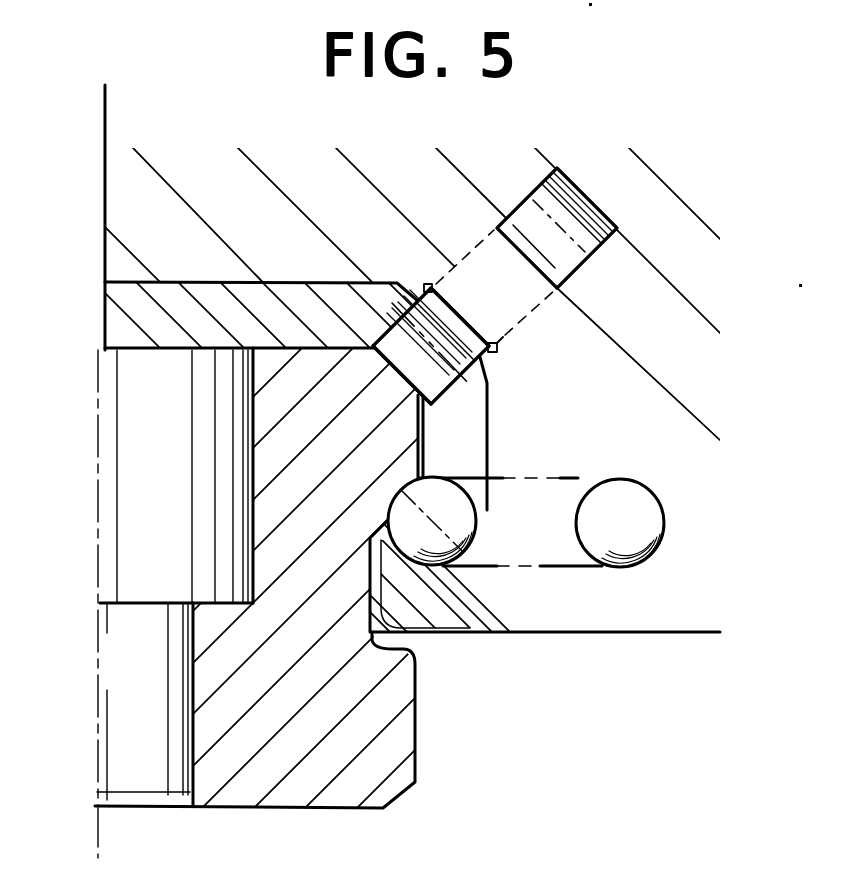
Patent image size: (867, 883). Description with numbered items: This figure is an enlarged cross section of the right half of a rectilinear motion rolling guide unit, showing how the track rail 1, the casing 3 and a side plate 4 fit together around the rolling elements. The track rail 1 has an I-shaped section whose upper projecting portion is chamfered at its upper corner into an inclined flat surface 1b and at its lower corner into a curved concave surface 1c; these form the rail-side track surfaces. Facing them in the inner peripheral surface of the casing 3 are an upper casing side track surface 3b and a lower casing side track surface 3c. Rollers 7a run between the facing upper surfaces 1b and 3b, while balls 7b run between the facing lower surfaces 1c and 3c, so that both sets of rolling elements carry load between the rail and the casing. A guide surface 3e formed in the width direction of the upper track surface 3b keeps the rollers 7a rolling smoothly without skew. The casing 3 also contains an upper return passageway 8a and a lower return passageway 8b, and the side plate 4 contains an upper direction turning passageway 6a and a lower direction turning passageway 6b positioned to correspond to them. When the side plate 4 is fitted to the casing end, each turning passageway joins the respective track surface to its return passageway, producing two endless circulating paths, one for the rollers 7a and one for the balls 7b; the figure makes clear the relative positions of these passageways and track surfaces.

The track rail 1 is at (297, 785).
The inclined flat surface 1b is at (397, 377).
The curved concave surface 1c is at (390, 493).
The casing 3 is at (578, 620).
The upper casing side track surface 3b is at (458, 318).
The lower casing side track surface 3c is at (478, 548).
The guide surface 3e is at (424, 286).
The side plate 4 is at (107, 315).
The upper direction turning passageway 6a is at (478, 250).
The lower direction turning passageway 6b is at (546, 488).
The roller 7a is at (606, 245).
The ball 7b is at (641, 516).
The upper return passageway 8a is at (580, 203).
The lower return passageway 8b is at (665, 527).